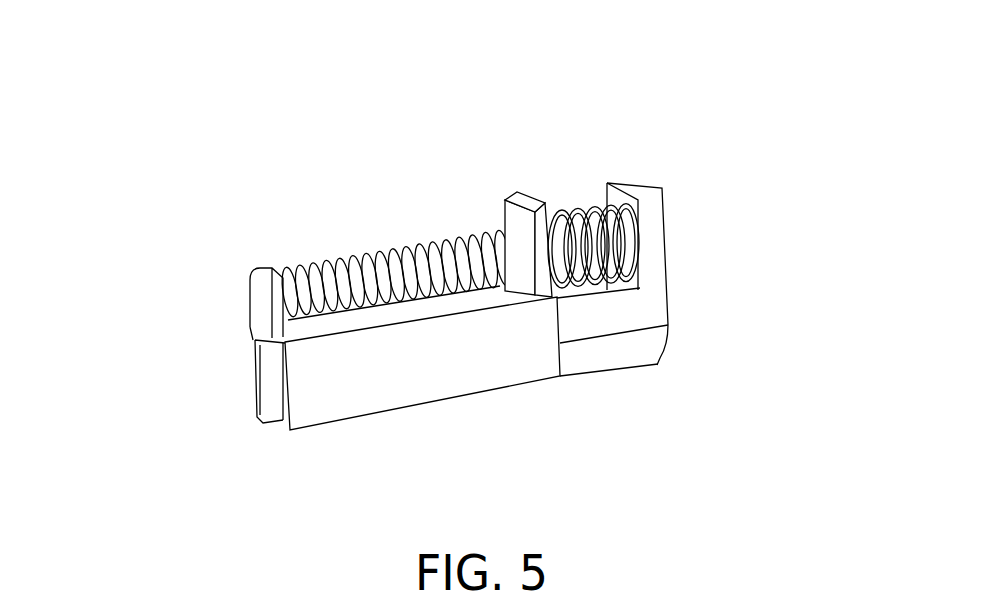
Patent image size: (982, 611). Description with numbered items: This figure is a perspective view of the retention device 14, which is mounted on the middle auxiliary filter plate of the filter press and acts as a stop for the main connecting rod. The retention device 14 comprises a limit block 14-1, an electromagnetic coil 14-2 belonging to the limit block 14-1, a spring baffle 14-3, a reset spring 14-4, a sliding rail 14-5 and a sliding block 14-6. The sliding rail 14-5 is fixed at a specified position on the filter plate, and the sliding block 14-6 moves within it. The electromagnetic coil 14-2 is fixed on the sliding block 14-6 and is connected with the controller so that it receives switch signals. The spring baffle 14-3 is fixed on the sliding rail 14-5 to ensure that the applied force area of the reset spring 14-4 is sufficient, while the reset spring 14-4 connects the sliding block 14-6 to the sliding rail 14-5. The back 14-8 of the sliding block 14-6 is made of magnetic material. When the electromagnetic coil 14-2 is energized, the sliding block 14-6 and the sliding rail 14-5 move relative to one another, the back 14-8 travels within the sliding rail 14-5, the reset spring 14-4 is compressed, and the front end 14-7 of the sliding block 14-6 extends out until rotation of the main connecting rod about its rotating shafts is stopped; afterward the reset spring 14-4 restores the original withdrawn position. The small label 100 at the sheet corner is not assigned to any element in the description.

The retention device 14 is at (111, 68).
The limit block 14-1 is at (336, 206).
The electromagnetic coil 14-2 is at (435, 195).
The spring baffle 14-3 is at (639, 180).
The reset spring 14-4 is at (744, 219).
The sliding rail 14-5 is at (391, 396).
The sliding block 14-6 is at (598, 396).
The front end of the sliding block 14-7 is at (257, 372).
The back of the sliding block 14-8 is at (627, 320).
The device 100 is at (56, 592).